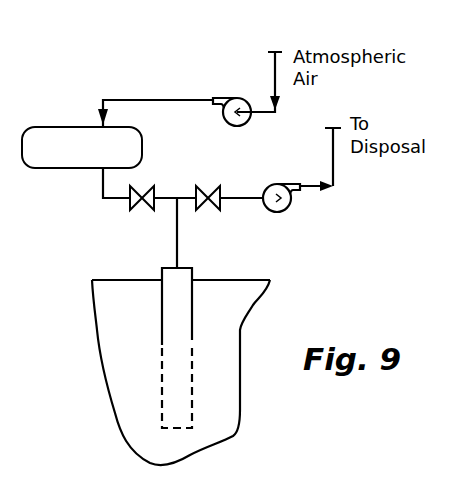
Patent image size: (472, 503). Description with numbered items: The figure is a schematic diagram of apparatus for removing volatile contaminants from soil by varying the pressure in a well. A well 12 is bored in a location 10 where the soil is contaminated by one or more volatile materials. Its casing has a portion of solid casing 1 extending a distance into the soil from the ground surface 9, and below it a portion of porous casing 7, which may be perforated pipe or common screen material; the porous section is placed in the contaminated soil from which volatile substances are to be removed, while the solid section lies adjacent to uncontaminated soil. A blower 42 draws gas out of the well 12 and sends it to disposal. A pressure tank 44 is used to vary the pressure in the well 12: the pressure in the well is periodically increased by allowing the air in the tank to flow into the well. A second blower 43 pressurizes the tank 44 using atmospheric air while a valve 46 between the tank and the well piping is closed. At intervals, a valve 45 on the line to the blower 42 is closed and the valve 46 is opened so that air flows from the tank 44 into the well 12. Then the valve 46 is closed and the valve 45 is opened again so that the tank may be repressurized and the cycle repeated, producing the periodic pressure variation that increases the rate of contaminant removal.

The solid casing 1 is at (161, 336).
The porous casing 7 is at (193, 383).
The ground surface 9 is at (228, 278).
The location 10 is at (143, 365).
The well 12 is at (163, 262).
The blower 42 is at (278, 213).
The blower 43 is at (219, 96).
The pressure tank 44 is at (143, 147).
The valve 45 is at (199, 187).
The valve 46 is at (133, 187).